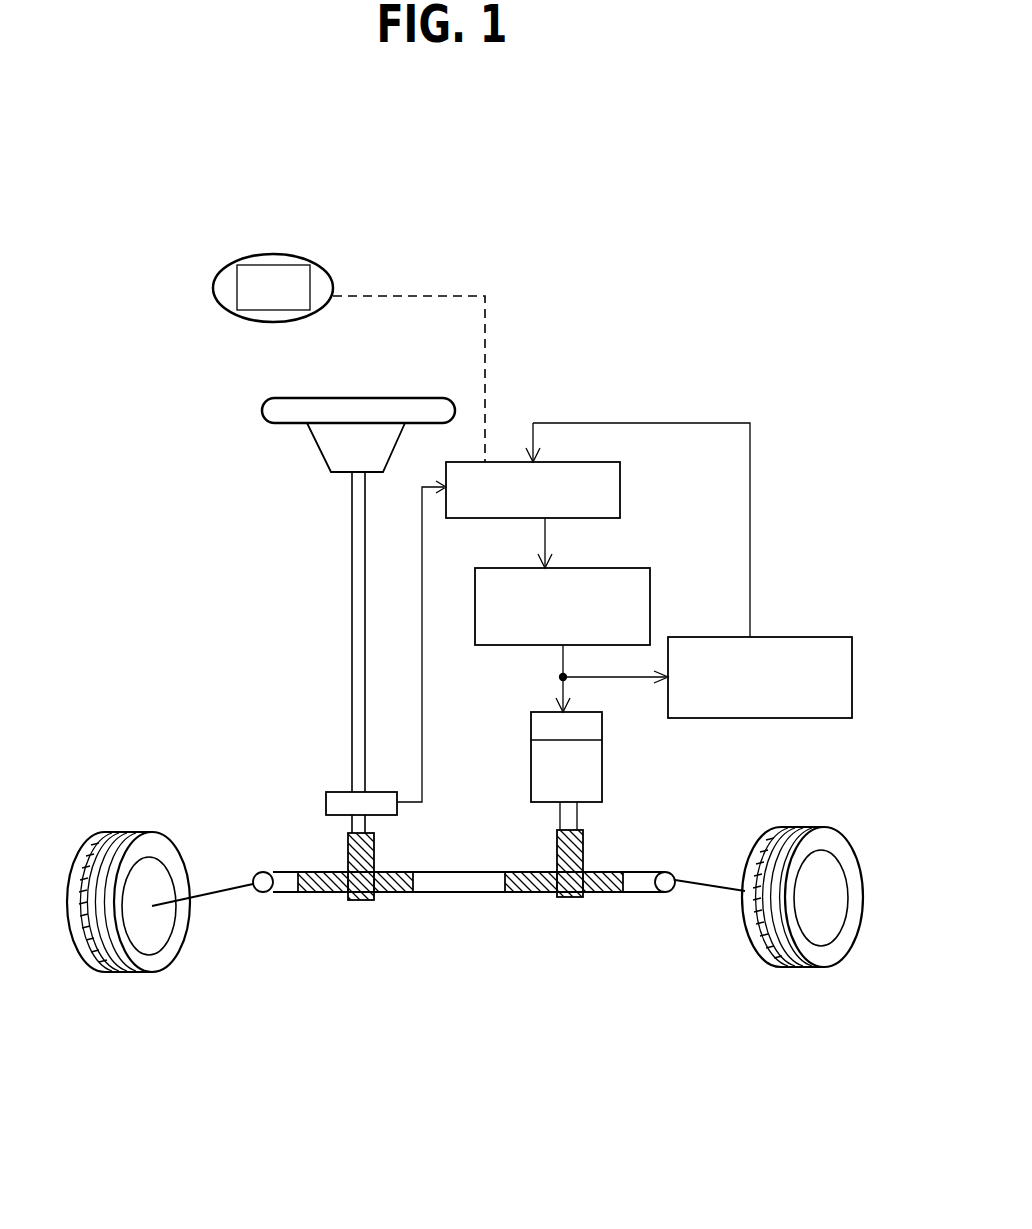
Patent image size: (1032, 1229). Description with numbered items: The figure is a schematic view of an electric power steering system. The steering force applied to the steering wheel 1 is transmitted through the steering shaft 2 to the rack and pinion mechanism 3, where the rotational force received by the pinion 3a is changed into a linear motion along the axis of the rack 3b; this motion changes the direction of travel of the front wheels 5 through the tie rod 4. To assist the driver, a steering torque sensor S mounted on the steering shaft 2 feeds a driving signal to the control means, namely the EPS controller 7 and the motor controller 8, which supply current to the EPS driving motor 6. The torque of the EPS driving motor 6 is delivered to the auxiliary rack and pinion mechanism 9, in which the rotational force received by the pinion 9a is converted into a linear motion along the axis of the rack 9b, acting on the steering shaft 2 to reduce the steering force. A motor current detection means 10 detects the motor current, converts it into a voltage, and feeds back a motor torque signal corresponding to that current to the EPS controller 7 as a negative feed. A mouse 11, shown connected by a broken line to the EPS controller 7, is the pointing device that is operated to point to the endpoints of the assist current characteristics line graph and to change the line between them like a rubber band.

The steering wheel 1 is at (387, 397).
The steering shaft 2 is at (352, 588).
The rack and pinion mechanism 3 is at (459, 920).
The pinion 3a is at (397, 865).
The rack 3b is at (322, 900).
The tie rod 4 is at (218, 896).
The front wheels 5 is at (124, 976).
The EPS driving motor 6 is at (602, 765).
The EPS controller 7 is at (620, 480).
The motor controller 8 is at (650, 600).
The auxiliary rack and pinion mechanism 9 is at (590, 918).
The pinion 9a is at (583, 848).
The rack 9b is at (603, 898).
The motor current detection means 10 is at (852, 677).
The mouse 11 is at (272, 254).
The steering torque sensor S is at (326, 801).